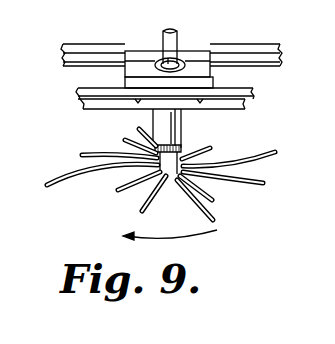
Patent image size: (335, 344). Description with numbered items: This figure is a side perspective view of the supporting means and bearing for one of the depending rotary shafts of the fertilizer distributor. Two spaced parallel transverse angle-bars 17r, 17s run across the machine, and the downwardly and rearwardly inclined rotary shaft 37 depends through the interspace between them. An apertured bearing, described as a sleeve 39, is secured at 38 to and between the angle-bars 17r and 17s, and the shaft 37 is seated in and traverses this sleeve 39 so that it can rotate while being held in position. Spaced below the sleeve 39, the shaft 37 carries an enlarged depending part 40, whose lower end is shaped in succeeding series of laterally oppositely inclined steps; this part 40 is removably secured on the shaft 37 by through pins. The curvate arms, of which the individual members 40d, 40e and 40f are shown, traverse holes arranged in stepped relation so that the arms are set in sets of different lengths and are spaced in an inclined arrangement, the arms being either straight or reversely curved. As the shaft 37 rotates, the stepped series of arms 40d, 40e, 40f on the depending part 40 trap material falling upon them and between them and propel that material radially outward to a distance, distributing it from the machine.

The transverse angle-bar 17s is at (115, 48).
The transverse angle-bar 17r is at (253, 97).
The inclined rotary shaft 37 is at (177, 43).
The bearing securement 38 is at (127, 77).
The apertured bearing sleeve 39 is at (181, 125).
The enlarged depending part 40 is at (172, 180).
The brush bristle 40d is at (71, 183).
The brush bristle 40e is at (141, 212).
The brush bristle 40f is at (120, 188).